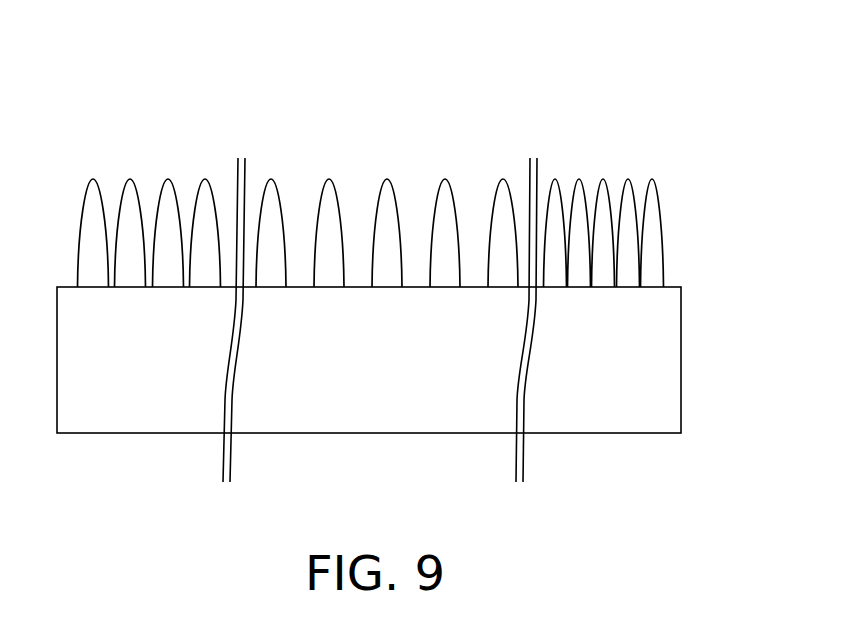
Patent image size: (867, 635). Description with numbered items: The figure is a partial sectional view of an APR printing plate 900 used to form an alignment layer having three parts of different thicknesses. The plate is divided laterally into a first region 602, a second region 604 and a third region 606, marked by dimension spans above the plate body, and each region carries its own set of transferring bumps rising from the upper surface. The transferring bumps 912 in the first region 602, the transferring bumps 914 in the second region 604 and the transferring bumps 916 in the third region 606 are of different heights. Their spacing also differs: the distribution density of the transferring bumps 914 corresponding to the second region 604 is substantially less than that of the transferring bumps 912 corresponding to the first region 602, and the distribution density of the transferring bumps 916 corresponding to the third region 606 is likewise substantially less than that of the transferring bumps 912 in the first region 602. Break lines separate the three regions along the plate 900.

The APR printing plate 900 is at (403, 268).
The first region 602 is at (242, 99).
The second region 604 is at (242, 81).
The third region 606 is at (532, 81).
The transferring bumps 912 is at (92, 220).
The transferring bumps 914 is at (271, 212).
The transferring bumps 916 is at (652, 217).